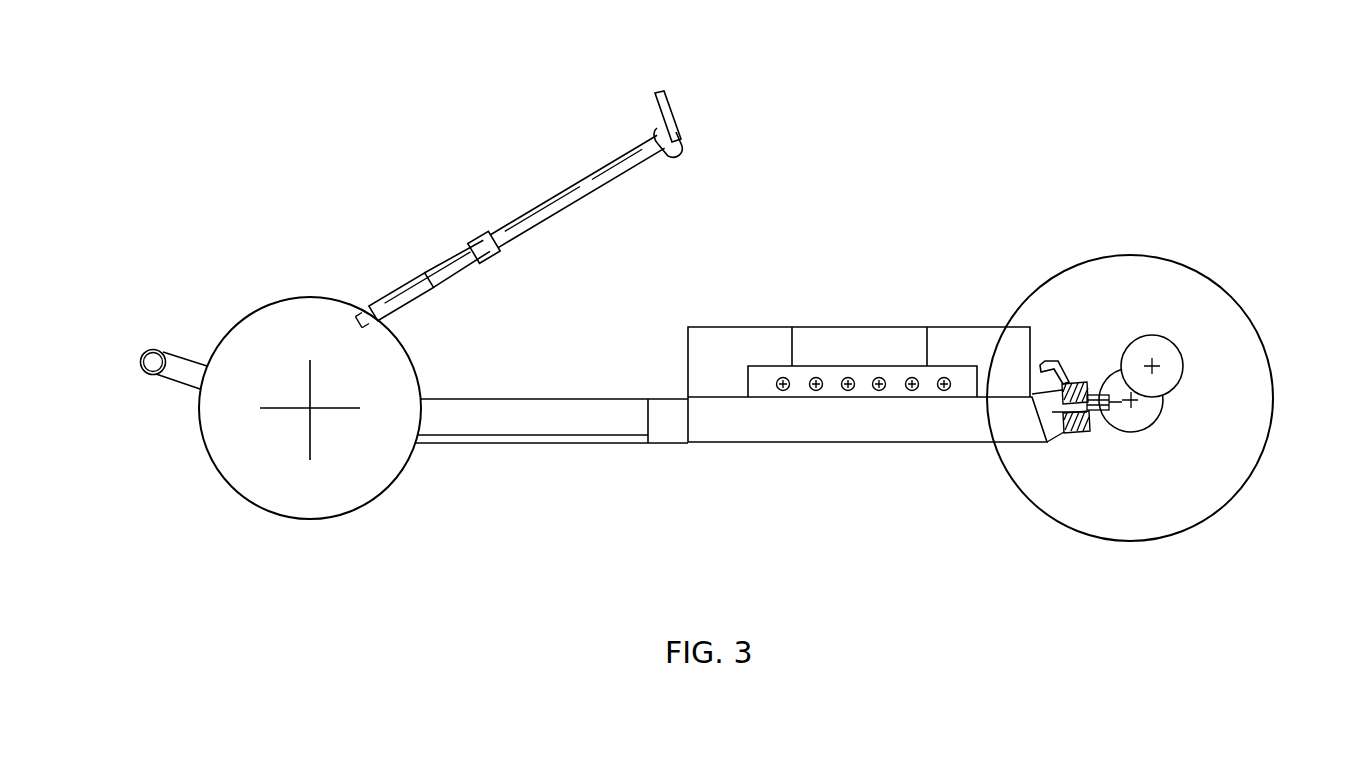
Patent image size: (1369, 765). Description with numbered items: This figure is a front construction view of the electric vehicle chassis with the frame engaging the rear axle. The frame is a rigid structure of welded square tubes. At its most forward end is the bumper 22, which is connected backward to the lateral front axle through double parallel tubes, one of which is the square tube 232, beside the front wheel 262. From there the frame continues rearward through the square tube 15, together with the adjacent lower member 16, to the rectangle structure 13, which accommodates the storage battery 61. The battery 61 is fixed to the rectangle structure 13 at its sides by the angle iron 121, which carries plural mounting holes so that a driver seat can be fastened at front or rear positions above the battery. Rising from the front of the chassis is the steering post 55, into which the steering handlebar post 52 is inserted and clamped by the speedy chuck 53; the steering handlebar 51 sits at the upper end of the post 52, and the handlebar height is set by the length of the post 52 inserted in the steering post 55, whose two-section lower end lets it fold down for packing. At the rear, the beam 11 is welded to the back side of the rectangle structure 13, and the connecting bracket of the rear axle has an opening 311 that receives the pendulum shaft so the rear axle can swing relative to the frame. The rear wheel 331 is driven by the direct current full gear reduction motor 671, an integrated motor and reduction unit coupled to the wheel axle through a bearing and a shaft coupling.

The beam 11 is at (1052, 430).
The rectangle structure 13 is at (952, 428).
The square tube 15 is at (605, 420).
The lower rod 16 is at (525, 437).
The bumper 22 is at (143, 367).
The steering handlebar 51 is at (663, 102).
The steering handlebar post 52 is at (565, 205).
The speedy chuck 53 is at (488, 257).
The steering post 55 is at (392, 307).
The storage battery 61 is at (740, 338).
The angle iron 121 is at (863, 420).
The square tube 232 is at (195, 380).
The right front wheel 262 is at (362, 498).
The opening 311 is at (1087, 423).
The rear wheel 331 is at (1252, 458).
The direct current full gear reduction motor 671 is at (1172, 357).